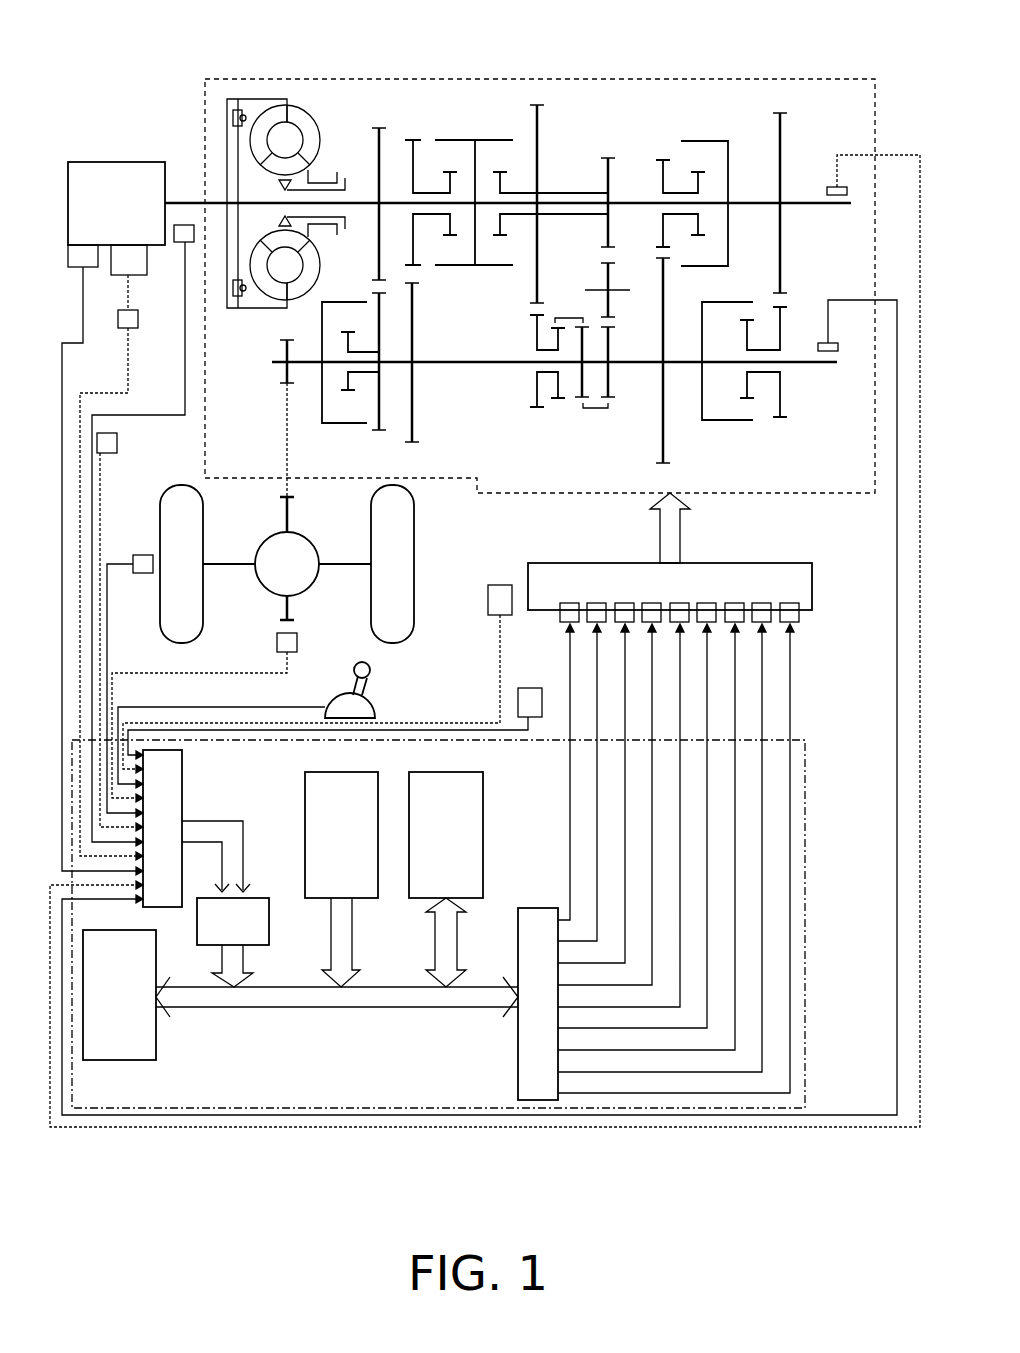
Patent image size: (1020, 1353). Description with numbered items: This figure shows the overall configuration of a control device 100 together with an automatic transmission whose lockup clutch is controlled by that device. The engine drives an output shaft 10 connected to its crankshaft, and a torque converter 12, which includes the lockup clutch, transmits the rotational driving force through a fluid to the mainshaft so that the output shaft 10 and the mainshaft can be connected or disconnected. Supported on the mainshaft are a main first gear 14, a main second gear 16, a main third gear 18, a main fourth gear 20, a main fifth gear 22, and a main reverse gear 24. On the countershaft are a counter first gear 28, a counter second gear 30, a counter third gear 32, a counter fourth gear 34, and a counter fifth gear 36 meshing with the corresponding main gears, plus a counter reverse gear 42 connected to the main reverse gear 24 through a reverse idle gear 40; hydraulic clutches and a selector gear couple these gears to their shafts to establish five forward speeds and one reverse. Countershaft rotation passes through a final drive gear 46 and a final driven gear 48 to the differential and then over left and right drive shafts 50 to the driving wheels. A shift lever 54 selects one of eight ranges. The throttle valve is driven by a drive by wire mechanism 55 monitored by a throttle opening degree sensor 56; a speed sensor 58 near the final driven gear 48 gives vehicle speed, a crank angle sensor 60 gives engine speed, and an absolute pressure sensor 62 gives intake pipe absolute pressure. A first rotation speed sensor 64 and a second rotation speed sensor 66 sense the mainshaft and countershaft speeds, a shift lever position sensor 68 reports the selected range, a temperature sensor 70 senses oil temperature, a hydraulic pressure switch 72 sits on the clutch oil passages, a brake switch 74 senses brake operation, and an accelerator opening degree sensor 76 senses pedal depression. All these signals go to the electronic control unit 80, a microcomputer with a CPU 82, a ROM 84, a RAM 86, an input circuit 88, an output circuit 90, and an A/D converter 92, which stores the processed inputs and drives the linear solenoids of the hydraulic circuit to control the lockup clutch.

The output shaft 10 is at (186, 203).
The torque converter 12 is at (306, 98).
The main first gear 14 is at (663, 160).
The main second gear 16 is at (413, 140).
The main third gear 18 is at (379, 128).
The main fourth gear 20 is at (537, 105).
The main fifth gear 22 is at (780, 113).
The main reverse gear 24 is at (608, 158).
The counter first gear 28 is at (666, 462).
The counter second gear 30 is at (413, 441).
The counter third gear 32 is at (379, 431).
The counter fourth gear 34 is at (537, 408).
The counter fifth gear 36 is at (781, 420).
The reverse idle gear 40 is at (600, 260).
The counter reverse gear 42 is at (606, 400).
The final drive gear 46 is at (284, 384).
The final driven gear 48 is at (296, 515).
The drive shafts 50 is at (232, 562).
The shift lever 54 is at (380, 690).
The drive by wire (DBW) mechanism 55 is at (118, 277).
The throttle opening degree sensor 56 is at (140, 330).
The speed sensor 58 is at (298, 641).
The crank angle sensor 60 is at (180, 243).
The absolute pressure sensor 62 is at (73, 270).
The first rotation speed sensor 64 is at (834, 187).
The second rotation speed sensor 66 is at (824, 343).
The shift lever position sensor 68 is at (377, 712).
The temperature sensor 70 is at (488, 600).
The hydraulic pressure switch 72 is at (530, 735).
The brake switch 74 is at (143, 574).
The accelerator opening degree sensor 76 is at (118, 443).
The electronic control unit (ECU) 80 is at (806, 866).
The CPU 82 is at (157, 1053).
The ROM 84 is at (305, 808).
The RAM 86 is at (484, 808).
The input circuit 88 is at (183, 760).
The output circuit 90 is at (518, 1090).
The A/D converter 92 is at (270, 936).
The control device 100 is at (812, 1012).